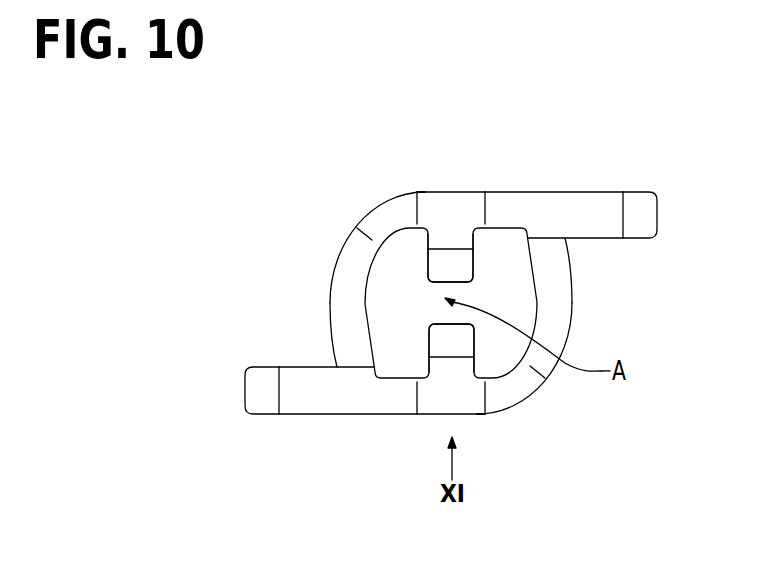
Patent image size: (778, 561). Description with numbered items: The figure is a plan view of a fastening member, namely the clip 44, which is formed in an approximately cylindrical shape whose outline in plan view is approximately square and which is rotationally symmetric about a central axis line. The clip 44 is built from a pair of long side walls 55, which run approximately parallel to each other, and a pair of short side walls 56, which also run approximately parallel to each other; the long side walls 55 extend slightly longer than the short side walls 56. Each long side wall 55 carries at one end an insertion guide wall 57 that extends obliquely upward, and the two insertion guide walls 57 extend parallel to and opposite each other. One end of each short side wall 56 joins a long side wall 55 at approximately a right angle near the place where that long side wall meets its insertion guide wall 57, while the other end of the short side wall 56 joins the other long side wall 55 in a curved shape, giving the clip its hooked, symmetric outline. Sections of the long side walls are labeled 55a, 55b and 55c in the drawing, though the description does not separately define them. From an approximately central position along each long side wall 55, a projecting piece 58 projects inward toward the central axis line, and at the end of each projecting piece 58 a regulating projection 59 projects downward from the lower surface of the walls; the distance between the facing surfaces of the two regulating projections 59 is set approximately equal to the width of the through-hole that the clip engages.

The clip 44 is at (600, 147).
The long side wall 55 is at (498, 192).
The intermediate portion 55a is at (455, 192).
The arm portion 55b is at (510, 212).
The curved portion 55c is at (373, 213).
The short side wall 56 is at (330, 297).
The insertion guide wall 57 is at (608, 202).
The projecting piece 58 is at (450, 235).
The regulating projection 59 is at (460, 264).